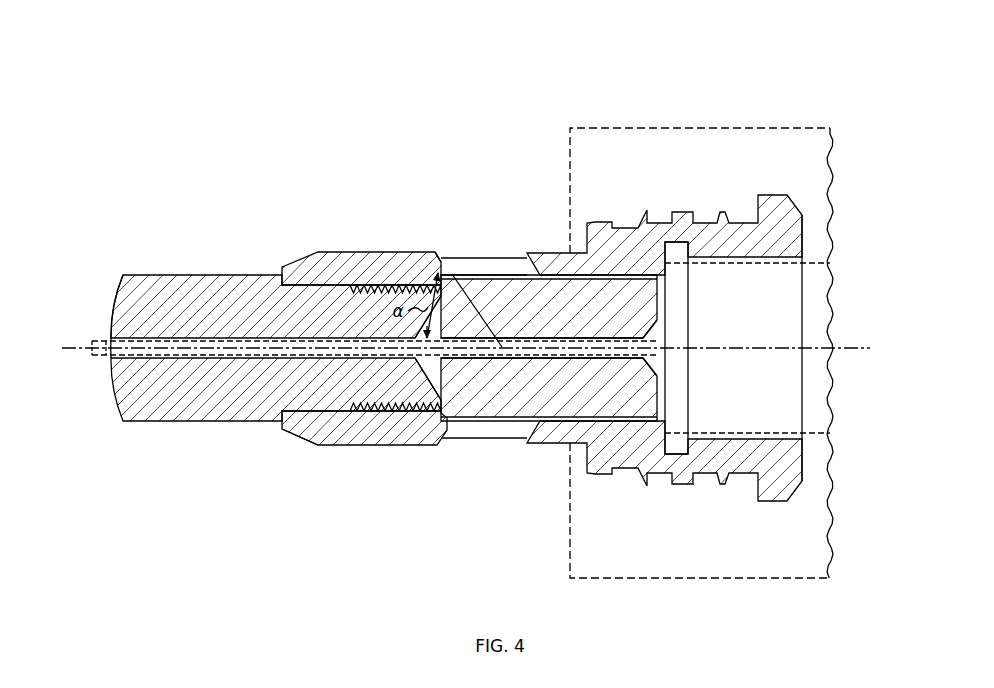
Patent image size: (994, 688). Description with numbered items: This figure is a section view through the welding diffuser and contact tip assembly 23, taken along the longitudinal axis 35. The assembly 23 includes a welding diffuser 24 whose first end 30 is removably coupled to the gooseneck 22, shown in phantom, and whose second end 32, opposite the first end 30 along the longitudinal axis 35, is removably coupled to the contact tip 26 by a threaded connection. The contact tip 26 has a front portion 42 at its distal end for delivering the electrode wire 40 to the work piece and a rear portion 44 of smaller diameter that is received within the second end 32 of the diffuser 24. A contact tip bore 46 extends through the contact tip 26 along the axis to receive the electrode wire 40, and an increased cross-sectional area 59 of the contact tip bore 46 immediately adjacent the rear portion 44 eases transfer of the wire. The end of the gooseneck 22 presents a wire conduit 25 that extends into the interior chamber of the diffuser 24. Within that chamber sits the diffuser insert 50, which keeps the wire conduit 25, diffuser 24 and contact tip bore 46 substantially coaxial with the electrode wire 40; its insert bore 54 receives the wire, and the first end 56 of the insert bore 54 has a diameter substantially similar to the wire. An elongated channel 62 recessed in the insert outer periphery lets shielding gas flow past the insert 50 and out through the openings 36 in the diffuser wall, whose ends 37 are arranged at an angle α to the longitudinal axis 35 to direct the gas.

The gooseneck 22 is at (725, 128).
The welding diffuser and contact tip assembly 23 is at (447, 102).
The welding diffuser 24 is at (315, 435).
The wire conduit 25 is at (678, 456).
The contact tip 26 is at (145, 410).
The first end 30 is at (782, 507).
The second end 32 is at (277, 437).
The longitudinal axis 35 is at (82, 347).
The openings 36 is at (518, 253).
The ends of the opening 37 is at (438, 252).
The electrode wire 40 is at (103, 360).
The front portion 42 is at (113, 277).
The rear portion 44 is at (422, 420).
The contact tip bore 46 is at (110, 333).
The diffuser insert 50 is at (595, 407).
The insert bore 54 is at (528, 367).
The first end of the insert bore 56 is at (653, 330).
The increased cross-sectional area 59 is at (437, 373).
The elongated channel 62 is at (480, 273).